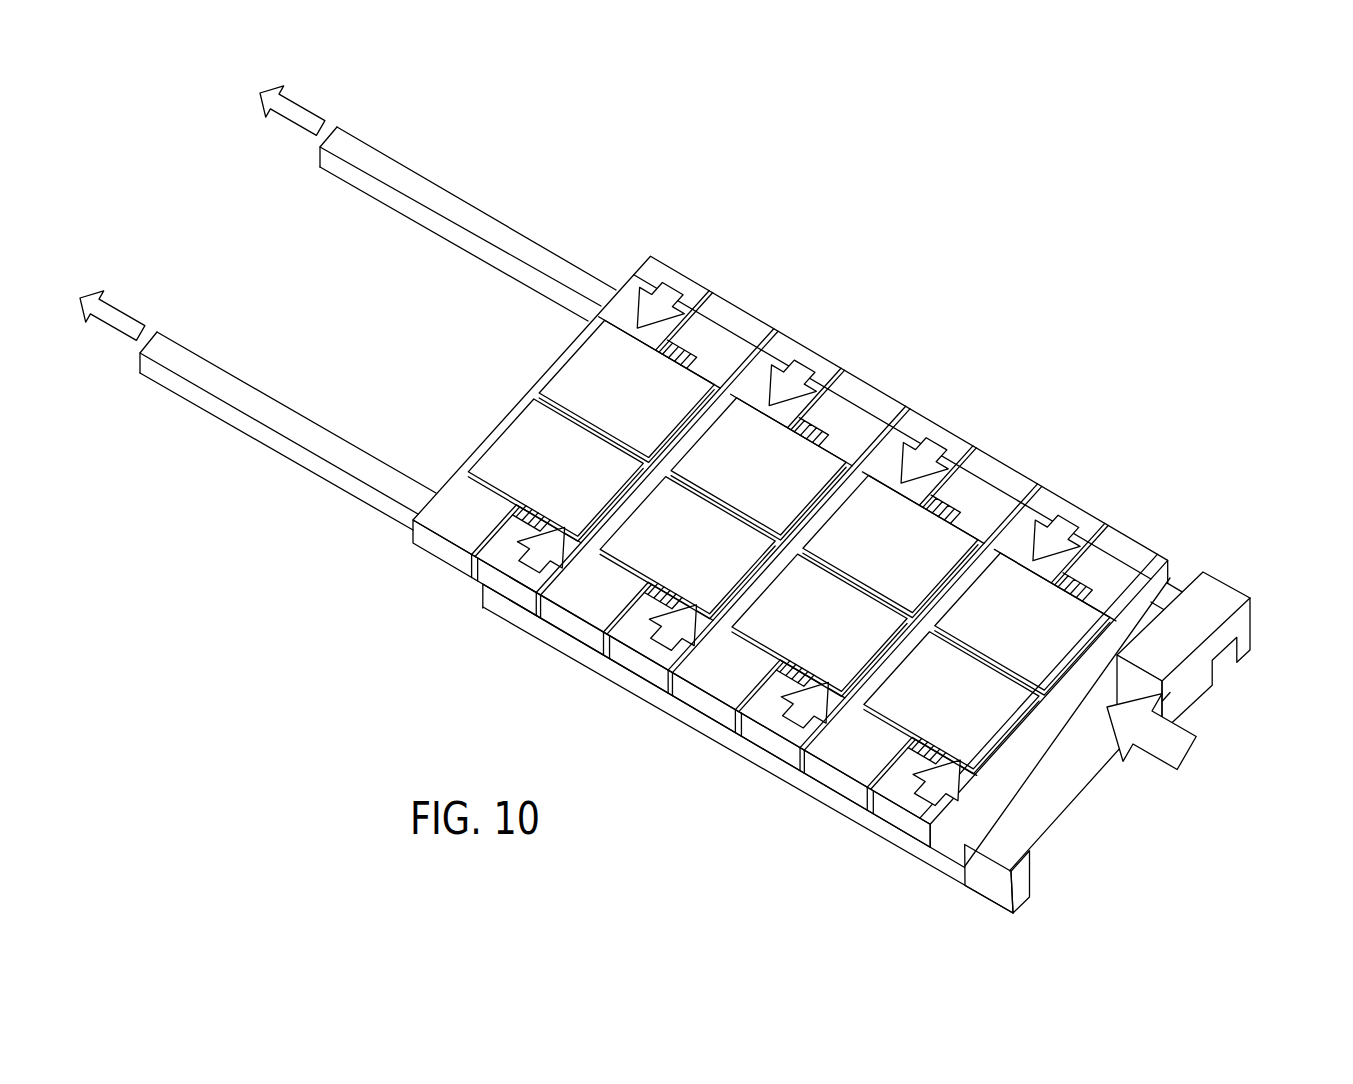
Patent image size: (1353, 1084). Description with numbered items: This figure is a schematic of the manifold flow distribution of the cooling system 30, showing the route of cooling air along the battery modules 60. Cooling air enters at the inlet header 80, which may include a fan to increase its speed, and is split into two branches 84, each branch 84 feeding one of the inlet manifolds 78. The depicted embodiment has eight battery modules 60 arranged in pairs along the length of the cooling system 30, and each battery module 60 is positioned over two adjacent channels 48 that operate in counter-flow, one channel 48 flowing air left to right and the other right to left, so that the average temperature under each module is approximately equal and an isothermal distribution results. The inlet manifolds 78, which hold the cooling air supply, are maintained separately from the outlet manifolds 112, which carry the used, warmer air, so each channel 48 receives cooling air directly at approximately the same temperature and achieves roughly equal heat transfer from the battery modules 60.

The cooling system 30 is at (698, 499).
The channels 48 is at (652, 268).
The battery modules 60 is at (644, 398).
The inlet manifolds 78 is at (1170, 592).
The inlet header 80 is at (1237, 582).
The branches 84 is at (1198, 662).
The outlet manifolds 112 is at (443, 198).